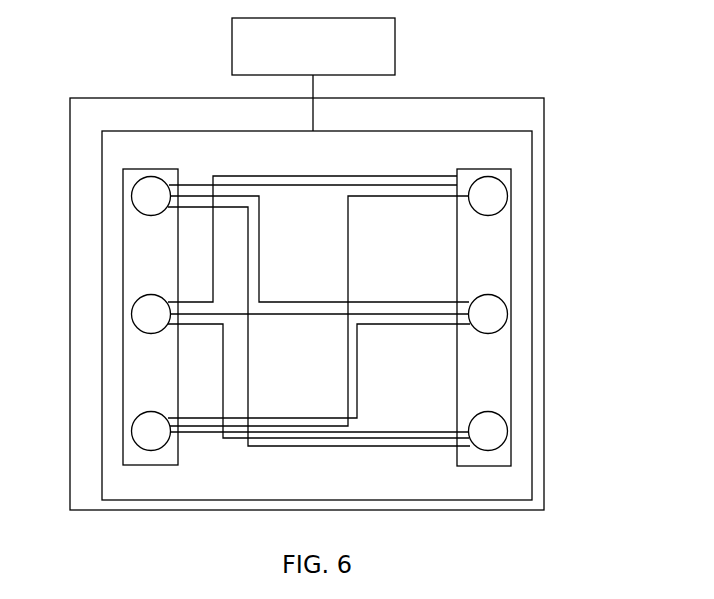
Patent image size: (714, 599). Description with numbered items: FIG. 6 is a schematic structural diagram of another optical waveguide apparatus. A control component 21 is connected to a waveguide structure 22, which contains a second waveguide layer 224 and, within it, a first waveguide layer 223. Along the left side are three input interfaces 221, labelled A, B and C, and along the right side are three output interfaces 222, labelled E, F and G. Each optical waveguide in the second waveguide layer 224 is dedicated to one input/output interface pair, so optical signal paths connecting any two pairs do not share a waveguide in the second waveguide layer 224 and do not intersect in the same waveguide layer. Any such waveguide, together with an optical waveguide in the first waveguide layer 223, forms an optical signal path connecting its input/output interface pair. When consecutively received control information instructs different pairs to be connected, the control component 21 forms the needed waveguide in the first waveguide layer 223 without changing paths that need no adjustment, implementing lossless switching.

The control component 21 is at (313, 74).
The waveguide structure 22 is at (321, 268).
The input interfaces 221 is at (123, 179).
The output interfaces 222 is at (511, 182).
The first waveguide layer 223 is at (321, 315).
The second waveguide layer 224 is at (307, 304).